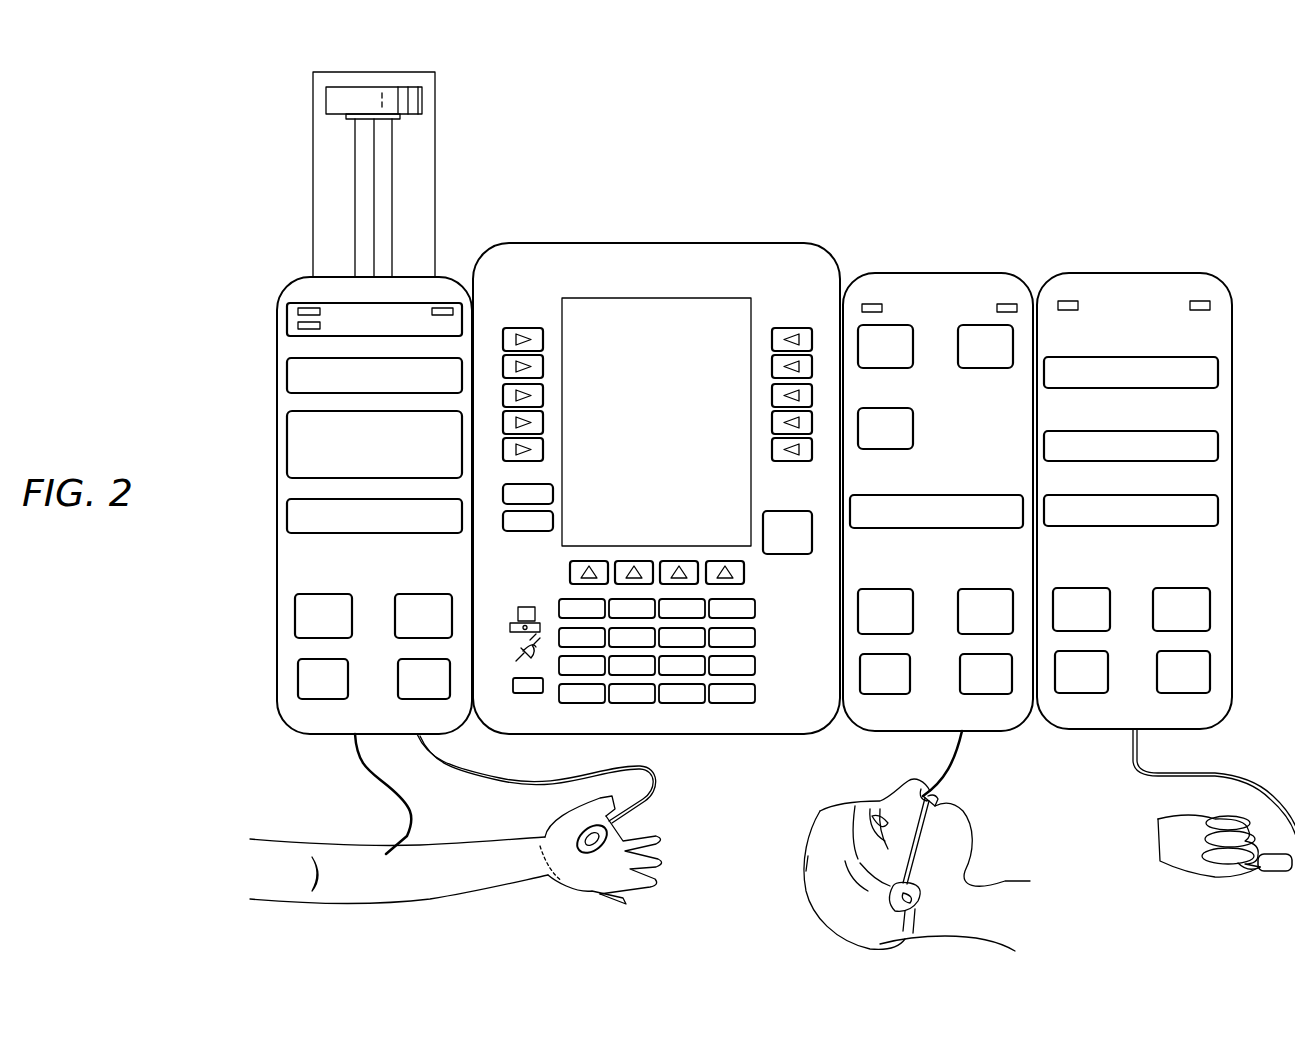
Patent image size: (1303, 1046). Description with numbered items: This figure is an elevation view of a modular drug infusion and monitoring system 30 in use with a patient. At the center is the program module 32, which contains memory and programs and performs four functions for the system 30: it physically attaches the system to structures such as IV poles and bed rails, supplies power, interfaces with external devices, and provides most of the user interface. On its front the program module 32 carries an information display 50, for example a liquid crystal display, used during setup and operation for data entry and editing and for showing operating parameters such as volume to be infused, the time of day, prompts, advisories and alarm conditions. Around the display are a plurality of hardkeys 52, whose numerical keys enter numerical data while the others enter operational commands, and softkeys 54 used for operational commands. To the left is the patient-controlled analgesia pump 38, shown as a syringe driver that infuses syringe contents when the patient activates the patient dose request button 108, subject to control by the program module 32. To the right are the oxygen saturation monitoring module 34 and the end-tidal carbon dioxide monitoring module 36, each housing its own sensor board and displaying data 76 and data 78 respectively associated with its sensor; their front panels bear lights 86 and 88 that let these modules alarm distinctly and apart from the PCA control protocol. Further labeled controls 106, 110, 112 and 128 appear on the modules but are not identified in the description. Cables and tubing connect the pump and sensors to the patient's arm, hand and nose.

The modular drug infusion and monitoring system 30 is at (902, 192).
The program module 32 is at (545, 242).
The SpO2 module 34 is at (1133, 272).
The EtCO2 module 36 is at (975, 272).
The PCA pump 38 is at (290, 273).
The information display 50 is at (678, 297).
The hardkeys 52 is at (555, 738).
The softkeys 54 is at (543, 365).
The data 76 is at (1218, 372).
The data 78 is at (975, 313).
The light 86 is at (1068, 300).
The light 88 is at (878, 303).
The menu key 106 is at (522, 327).
The patient dose request button 108 is at (788, 553).
The silence key 110 is at (553, 495).
The options key 112 is at (553, 522).
The select key 128 is at (1080, 587).